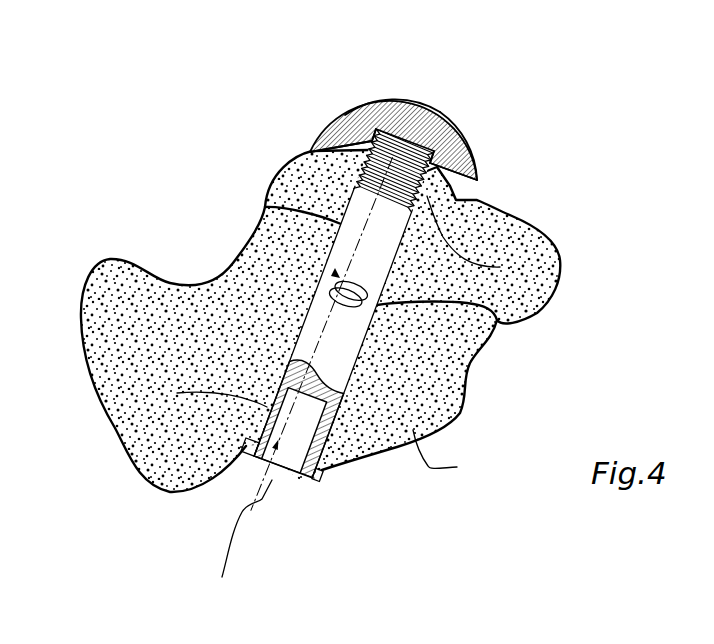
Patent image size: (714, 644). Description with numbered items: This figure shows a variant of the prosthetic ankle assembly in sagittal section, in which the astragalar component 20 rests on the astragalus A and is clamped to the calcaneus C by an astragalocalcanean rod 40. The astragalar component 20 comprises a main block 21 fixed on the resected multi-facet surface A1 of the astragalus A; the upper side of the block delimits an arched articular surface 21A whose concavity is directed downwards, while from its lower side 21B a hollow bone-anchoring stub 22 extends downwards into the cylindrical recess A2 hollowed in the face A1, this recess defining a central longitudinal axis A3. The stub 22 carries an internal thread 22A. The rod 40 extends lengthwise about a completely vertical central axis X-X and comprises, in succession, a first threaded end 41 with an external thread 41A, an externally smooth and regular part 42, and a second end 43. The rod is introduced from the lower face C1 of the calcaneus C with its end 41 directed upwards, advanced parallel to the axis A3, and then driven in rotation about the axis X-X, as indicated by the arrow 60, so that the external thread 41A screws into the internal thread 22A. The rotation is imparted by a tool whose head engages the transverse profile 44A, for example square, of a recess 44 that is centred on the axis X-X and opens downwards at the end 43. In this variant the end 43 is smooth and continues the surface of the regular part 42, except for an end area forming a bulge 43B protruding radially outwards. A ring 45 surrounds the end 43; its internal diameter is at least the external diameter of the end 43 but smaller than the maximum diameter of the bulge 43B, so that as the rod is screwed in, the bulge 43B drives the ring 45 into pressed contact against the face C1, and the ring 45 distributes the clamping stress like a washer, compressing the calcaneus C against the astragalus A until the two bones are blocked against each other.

The astragalar component 20 is at (369, 98).
The main block 21 is at (452, 124).
The articular surface 21A is at (394, 97).
The lower side of the block 21B is at (461, 184).
The hollow bone-anchoring stub 22 is at (318, 150).
The internal thread 22A is at (468, 152).
The astragalocalcanean rod 40 is at (312, 297).
The first threaded end 41 is at (265, 205).
The external thread 41A is at (500, 267).
The externally smooth and regular part 42 is at (337, 342).
The second end 43 is at (177, 393).
The bulge 43B is at (247, 446).
The recess 44 is at (273, 448).
The transverse profile 44A is at (281, 478).
The ring 45 is at (323, 479).
The arrow 60 is at (367, 247).
The astragalus A is at (523, 280).
The multi-facet surface A1 is at (328, 148).
The cylindrical recess A2 is at (350, 144).
The central longitudinal axis A3 is at (423, 103).
The calcaneus C is at (436, 404).
The lower face of the calcaneus C1 is at (345, 468).
The central axis X-X is at (337, 513).